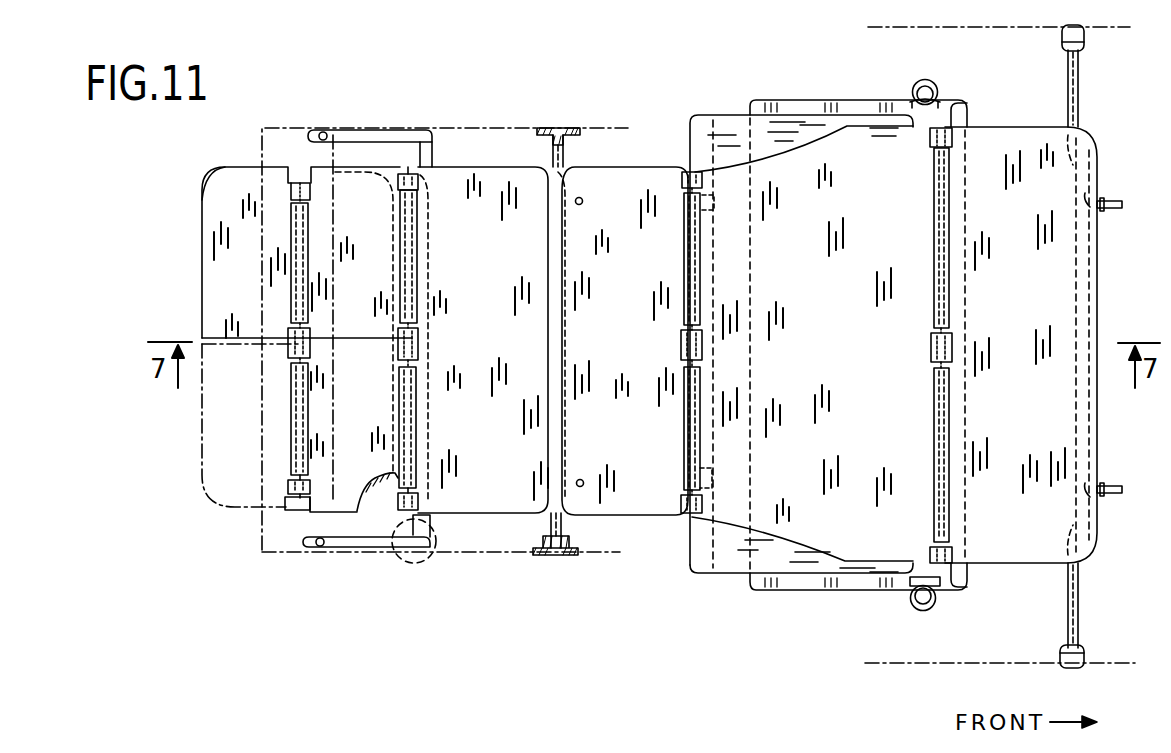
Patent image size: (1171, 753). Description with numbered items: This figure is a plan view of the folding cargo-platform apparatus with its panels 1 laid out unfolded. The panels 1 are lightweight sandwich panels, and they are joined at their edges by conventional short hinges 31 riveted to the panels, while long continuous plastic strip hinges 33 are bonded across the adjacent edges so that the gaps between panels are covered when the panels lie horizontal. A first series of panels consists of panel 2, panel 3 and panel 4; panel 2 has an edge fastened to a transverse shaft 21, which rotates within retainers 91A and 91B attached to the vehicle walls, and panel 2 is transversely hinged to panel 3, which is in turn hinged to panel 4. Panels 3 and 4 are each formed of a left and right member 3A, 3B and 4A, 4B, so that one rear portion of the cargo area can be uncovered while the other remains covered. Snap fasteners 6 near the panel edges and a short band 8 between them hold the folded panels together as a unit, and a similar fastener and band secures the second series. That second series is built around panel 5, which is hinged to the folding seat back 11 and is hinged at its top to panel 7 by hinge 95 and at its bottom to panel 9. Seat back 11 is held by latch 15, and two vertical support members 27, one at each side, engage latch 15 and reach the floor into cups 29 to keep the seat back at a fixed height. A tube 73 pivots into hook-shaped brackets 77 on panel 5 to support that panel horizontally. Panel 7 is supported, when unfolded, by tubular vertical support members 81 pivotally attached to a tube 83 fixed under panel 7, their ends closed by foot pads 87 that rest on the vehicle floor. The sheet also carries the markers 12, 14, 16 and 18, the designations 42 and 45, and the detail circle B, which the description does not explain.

The panels 1 is at (388, 152).
The panel 2 is at (494, 315).
The panel 3 is at (370, 301).
The left member of panel 3 3A is at (345, 500).
The right member of panel 3 3B is at (357, 177).
The panel 4 is at (236, 297).
The left member of panel 4 4A is at (218, 440).
The right member of panel 4 4B is at (218, 197).
The panel 5 is at (834, 317).
The snap fasteners 6 is at (583, 202).
The panel 7 is at (1028, 317).
The band 8 is at (1107, 212).
The panel 9 is at (634, 317).
The folding seat back 11 is at (964, 96).
The section line 12 is at (1123, 64).
The section line 14 is at (882, 612).
The latch 15 is at (914, 571).
The section line 16 is at (660, 536).
The section line 18 is at (378, 570).
The shaft 21 is at (560, 170).
The vertical support member 27 is at (924, 88).
The cup 29 is at (914, 97).
The short hinges 31 is at (310, 191).
The plastic strip hinges 33 is at (306, 236).
The fold line 42 is at (432, 232).
The rod 45 is at (322, 131).
The tube 73 is at (722, 263).
The hook-shaped brackets 77 is at (712, 192).
The vertical support members 81 is at (1068, 96).
The tube 83 is at (1078, 420).
The foot pads 87 is at (1065, 38).
The retainer 91A is at (545, 543).
The retainer 91B is at (554, 128).
The hinge 95 is at (932, 140).
The detail B is at (416, 566).